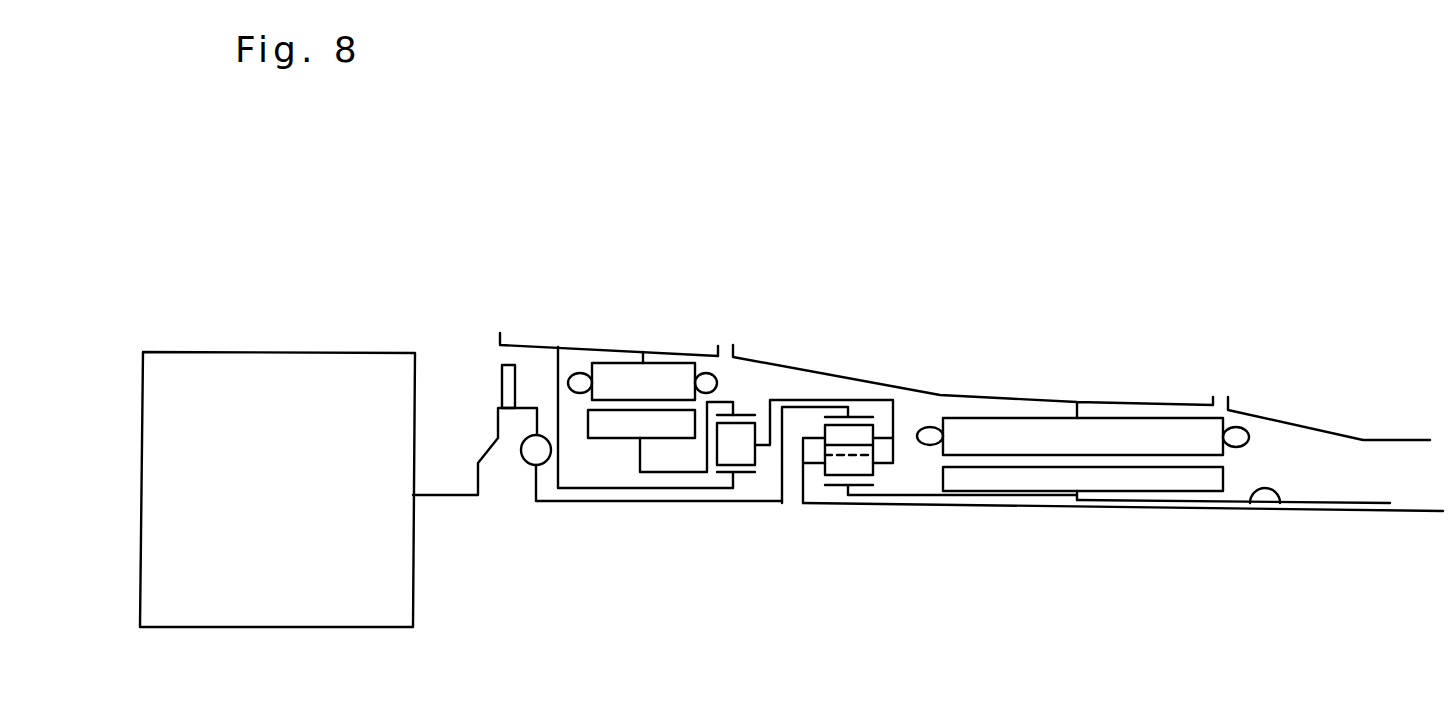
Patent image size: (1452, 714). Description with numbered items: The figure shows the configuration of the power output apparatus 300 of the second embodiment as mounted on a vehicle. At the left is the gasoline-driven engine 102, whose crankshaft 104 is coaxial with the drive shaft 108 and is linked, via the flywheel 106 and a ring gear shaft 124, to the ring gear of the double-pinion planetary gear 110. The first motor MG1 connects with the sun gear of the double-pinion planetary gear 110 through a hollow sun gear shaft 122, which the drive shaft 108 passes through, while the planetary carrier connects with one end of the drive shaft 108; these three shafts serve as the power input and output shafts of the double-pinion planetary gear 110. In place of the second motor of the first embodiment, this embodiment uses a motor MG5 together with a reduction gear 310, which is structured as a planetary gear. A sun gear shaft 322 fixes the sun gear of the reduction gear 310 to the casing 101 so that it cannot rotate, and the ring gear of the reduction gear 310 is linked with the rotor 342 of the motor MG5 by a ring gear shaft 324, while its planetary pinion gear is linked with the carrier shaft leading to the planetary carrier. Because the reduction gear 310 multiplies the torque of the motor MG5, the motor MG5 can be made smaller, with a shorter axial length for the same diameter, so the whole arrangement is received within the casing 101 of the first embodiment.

The engine 102 is at (270, 352).
The crankshaft 104 is at (433, 495).
The flywheel 106 is at (500, 372).
The power output apparatus 300 is at (1084, 193).
The reduction gear 310 is at (783, 344).
The casing 101 is at (1303, 427).
The motor MG5 is at (634, 315).
The rotor 342 is at (663, 423).
The sun gear shaft 322 is at (602, 488).
The ring gear shaft 324 is at (668, 472).
The ring gear shaft 124 is at (728, 501).
The double-pinion planetary gear 110 is at (893, 357).
The first motor MG1 is at (1120, 365).
The drive shaft 108 is at (1348, 511).
The sun gear shaft 122 is at (1273, 503).